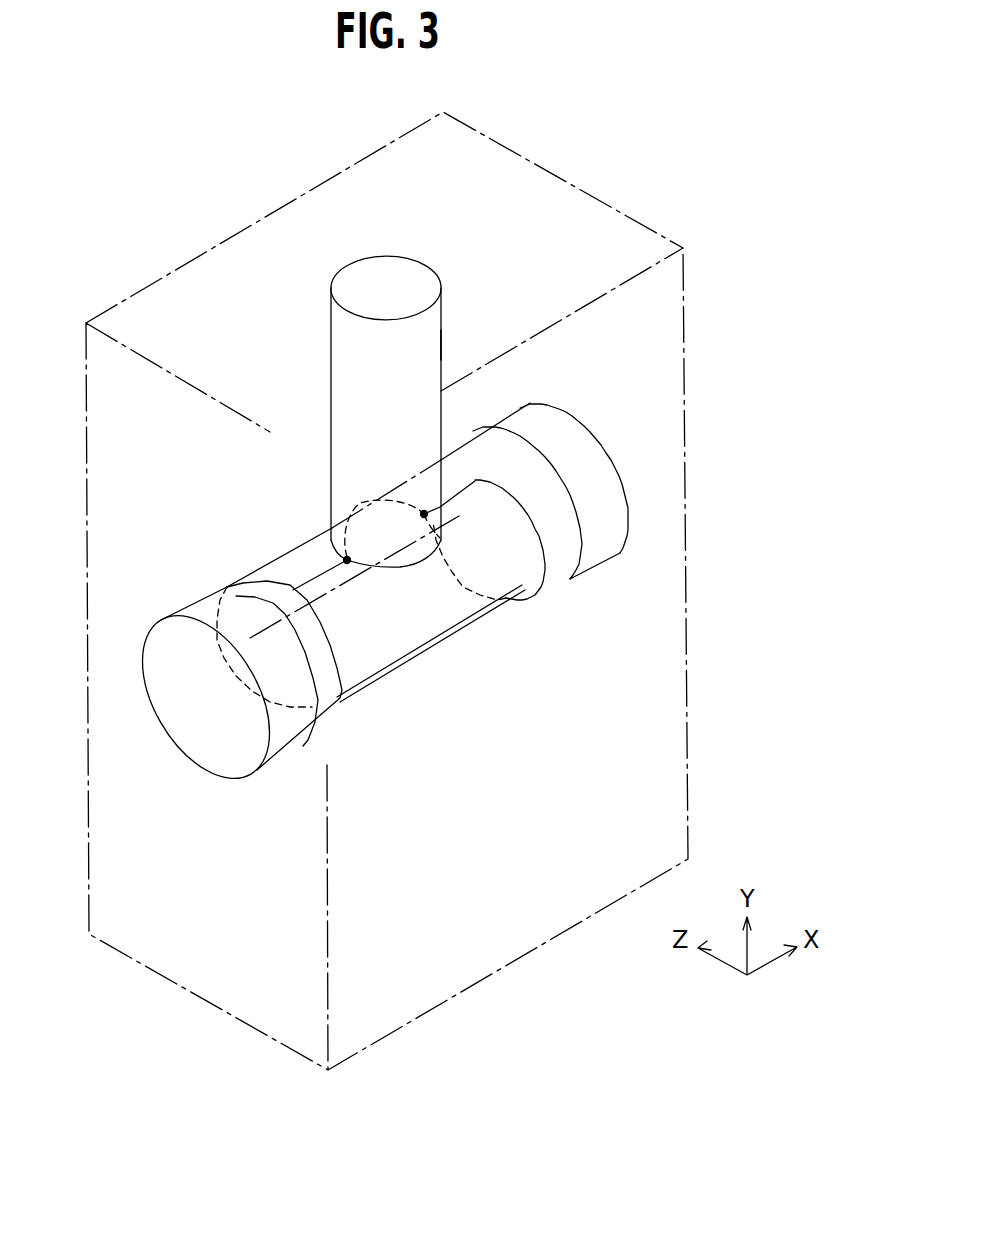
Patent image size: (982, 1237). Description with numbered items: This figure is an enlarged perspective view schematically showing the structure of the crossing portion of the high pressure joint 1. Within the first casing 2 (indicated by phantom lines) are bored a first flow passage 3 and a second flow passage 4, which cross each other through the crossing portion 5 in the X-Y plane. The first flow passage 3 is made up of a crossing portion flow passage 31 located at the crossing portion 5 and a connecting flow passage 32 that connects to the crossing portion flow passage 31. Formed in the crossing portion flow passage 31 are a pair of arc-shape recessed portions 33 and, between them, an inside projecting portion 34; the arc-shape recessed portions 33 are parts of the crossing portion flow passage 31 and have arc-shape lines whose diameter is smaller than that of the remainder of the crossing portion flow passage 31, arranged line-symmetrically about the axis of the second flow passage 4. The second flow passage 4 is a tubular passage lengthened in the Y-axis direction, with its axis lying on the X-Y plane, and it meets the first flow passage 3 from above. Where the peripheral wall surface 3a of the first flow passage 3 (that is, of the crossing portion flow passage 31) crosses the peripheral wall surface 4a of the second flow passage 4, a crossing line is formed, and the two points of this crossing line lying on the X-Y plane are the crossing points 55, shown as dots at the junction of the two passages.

The high pressure joint 1 is at (432, 591).
The first casing 2 is at (582, 222).
The first flow passage 3 is at (385, 589).
The peripheral wall surface of the first flow passage 3a is at (455, 597).
The second flow passage 4 is at (451, 296).
The peripheral wall surface of the second flow passage 4a is at (441, 350).
The crossing portion 5 is at (451, 662).
The crossing portion flow passage 31 is at (283, 559).
The connecting flow passage 32 is at (203, 598).
The arc-shape recessed portions 33 is at (297, 560).
The inside projecting portion 34 is at (464, 477).
The crossing points 55 is at (424, 512).